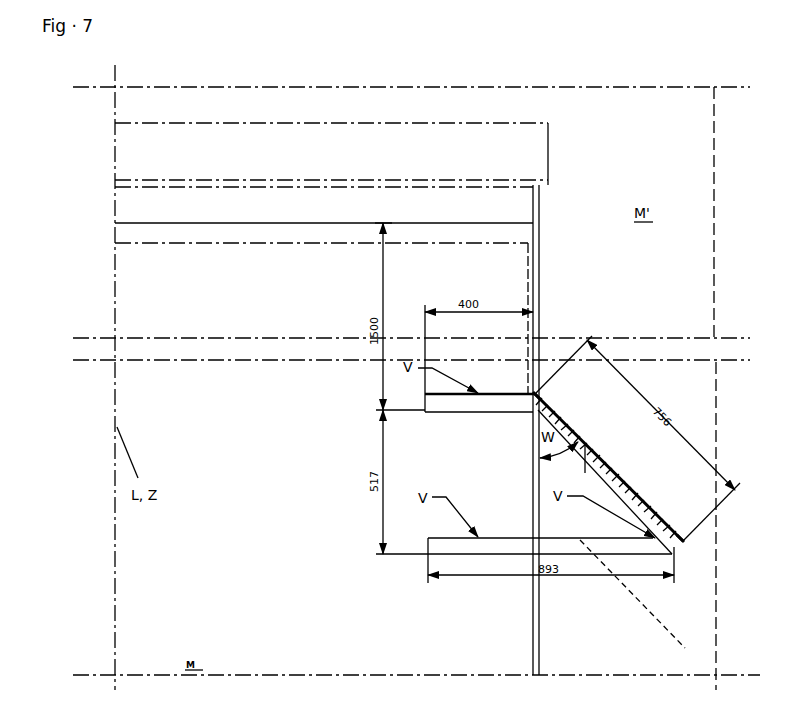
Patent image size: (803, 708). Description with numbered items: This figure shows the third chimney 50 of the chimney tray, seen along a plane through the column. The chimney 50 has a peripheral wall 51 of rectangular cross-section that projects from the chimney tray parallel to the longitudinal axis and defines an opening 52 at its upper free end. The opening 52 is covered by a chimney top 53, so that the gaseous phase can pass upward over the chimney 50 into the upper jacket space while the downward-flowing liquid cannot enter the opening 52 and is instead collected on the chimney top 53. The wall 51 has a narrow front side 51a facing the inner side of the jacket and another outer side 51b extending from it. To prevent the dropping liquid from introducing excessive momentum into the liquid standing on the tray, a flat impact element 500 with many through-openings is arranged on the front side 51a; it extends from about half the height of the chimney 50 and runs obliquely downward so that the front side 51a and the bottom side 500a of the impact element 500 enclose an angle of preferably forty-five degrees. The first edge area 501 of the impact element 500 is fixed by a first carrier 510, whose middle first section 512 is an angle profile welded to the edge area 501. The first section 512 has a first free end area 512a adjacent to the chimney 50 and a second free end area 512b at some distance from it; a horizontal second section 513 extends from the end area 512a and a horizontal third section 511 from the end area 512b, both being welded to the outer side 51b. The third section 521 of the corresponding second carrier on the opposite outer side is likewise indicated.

The third chimney 50 is at (543, 231).
The peripheral wall 51 is at (538, 280).
The front side 51a is at (541, 627).
The other outer side 51b is at (513, 592).
The opening 52 is at (338, 221).
The chimney top 53 is at (465, 143).
The flat impact element 500 is at (633, 482).
The bottom side 500a is at (576, 444).
The first edge area 501 is at (655, 504).
The first carrier 510 is at (483, 555).
The third section 511 is at (602, 548).
The first section 512 is at (605, 478).
The first free end area 512a is at (536, 393).
The second free end area 512b is at (685, 545).
The second section 513 is at (503, 401).
The third section of second carrier 521 is at (645, 601).